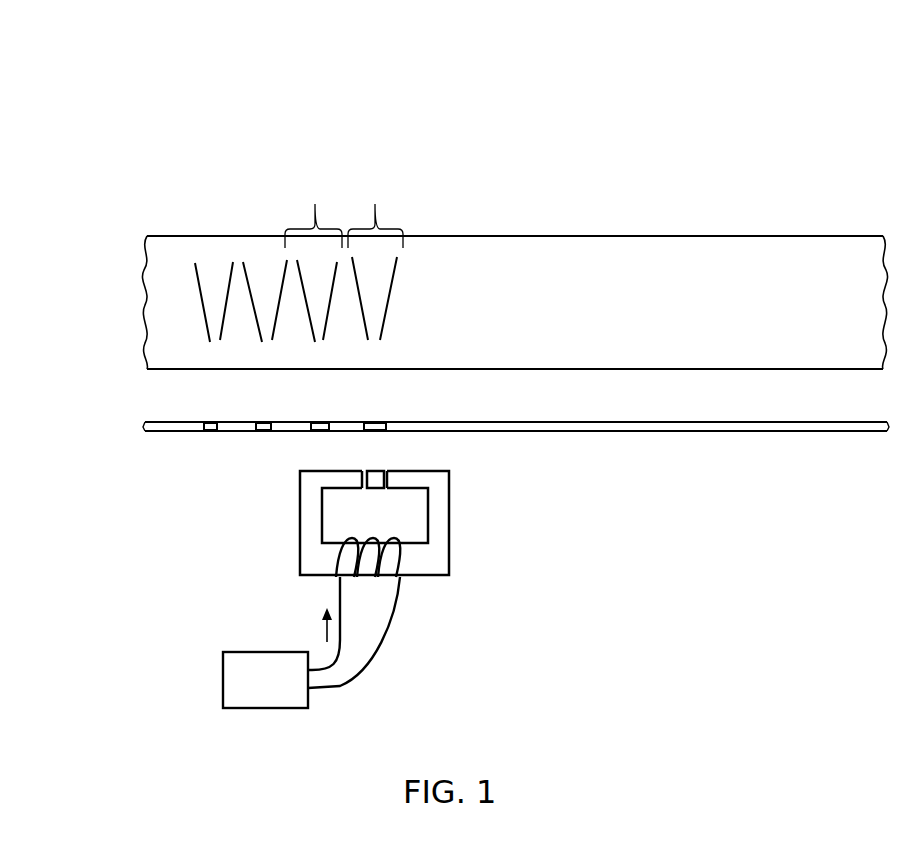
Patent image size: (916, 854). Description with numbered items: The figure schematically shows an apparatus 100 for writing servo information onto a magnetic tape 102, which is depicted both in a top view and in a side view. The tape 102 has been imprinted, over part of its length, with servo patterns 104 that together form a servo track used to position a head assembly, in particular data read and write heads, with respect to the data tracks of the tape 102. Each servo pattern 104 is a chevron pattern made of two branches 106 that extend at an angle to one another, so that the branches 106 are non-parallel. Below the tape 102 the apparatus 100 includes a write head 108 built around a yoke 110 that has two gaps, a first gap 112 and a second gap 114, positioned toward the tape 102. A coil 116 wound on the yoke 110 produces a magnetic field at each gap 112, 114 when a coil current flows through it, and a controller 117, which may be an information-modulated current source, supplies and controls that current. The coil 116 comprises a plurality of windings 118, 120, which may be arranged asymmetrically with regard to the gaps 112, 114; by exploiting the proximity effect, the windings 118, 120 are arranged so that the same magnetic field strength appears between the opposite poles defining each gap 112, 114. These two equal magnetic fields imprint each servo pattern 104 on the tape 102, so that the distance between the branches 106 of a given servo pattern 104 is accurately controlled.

The apparatus 100 is at (98, 99).
The magnetic tape 102 is at (643, 235).
The servo pattern 104 is at (344, 212).
The branch 106 is at (360, 290).
The write head 108 is at (258, 479).
The yoke 110 is at (450, 524).
The first gap 112 is at (362, 470).
The second gap 114 is at (390, 470).
The coil 116 is at (408, 535).
The controller 117 is at (266, 695).
The winding 118 is at (370, 578).
The winding 120 is at (390, 578).